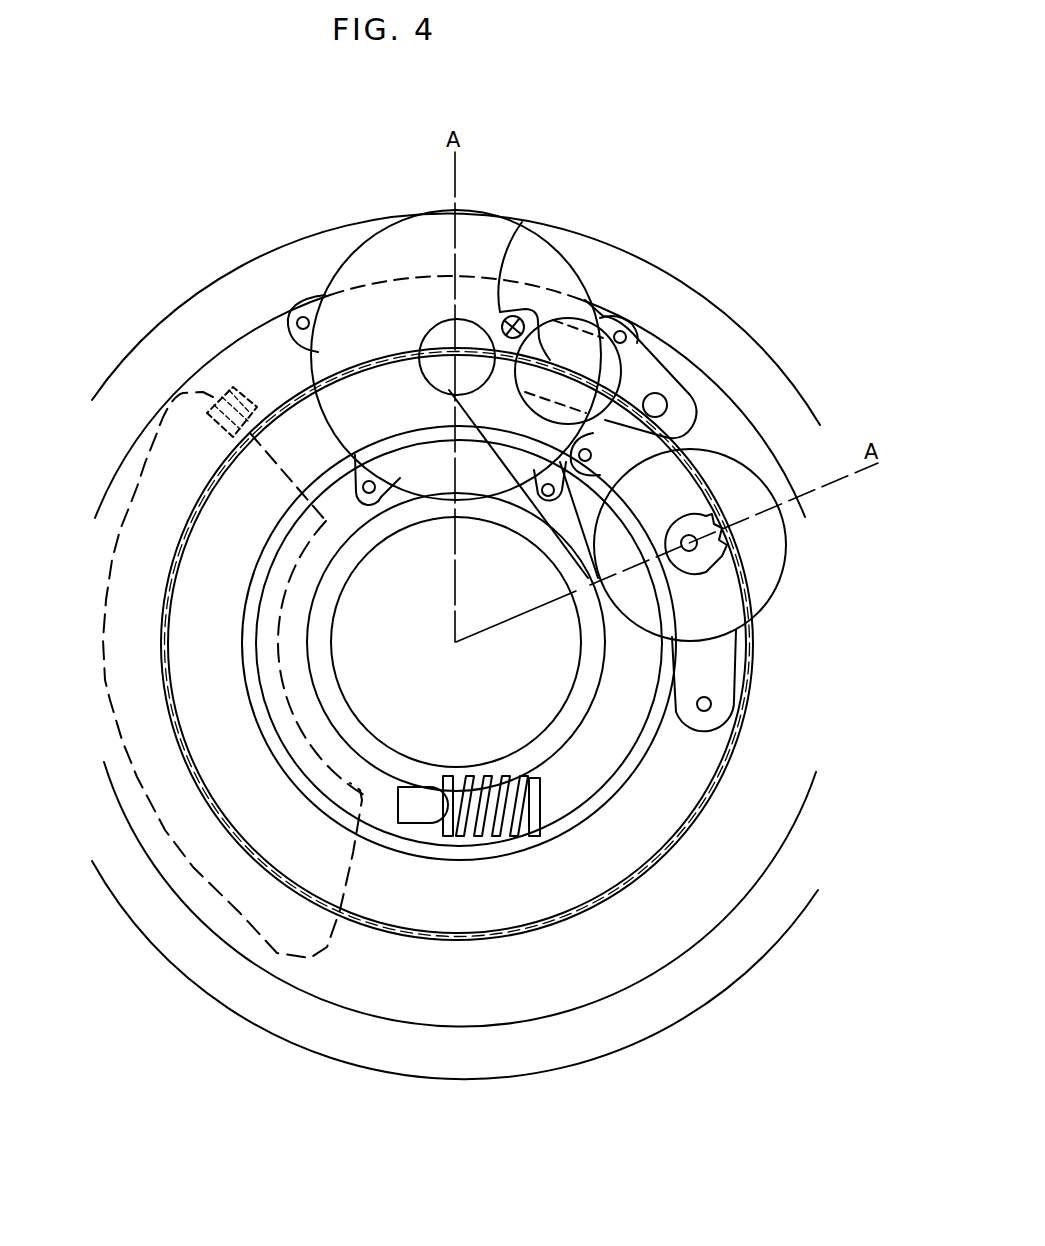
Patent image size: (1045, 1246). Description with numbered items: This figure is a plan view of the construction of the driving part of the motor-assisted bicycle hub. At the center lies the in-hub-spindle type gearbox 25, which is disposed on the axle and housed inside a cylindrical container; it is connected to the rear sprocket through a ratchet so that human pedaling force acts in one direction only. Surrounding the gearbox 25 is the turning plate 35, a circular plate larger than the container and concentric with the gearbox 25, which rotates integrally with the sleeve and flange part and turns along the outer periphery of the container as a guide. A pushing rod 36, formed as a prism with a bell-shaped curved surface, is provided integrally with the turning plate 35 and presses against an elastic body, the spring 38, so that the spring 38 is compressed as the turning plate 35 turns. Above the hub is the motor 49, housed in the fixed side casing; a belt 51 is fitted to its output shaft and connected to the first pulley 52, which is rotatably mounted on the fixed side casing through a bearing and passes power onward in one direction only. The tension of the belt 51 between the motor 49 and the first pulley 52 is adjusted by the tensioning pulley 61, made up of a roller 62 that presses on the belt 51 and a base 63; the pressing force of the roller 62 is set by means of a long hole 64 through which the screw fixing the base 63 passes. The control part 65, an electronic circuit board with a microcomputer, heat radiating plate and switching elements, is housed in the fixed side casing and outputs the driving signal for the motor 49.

The in-hub-spindle type gearbox 25 is at (534, 703).
The turning plate 35 is at (300, 697).
The pushing rod 36 is at (415, 790).
The spring 38 is at (477, 837).
The motor 49 is at (366, 245).
The belt 51 is at (533, 517).
The first pulley 52 is at (727, 453).
The tensioning pulley 61 is at (633, 375).
The roller 62 is at (577, 318).
The base 63 is at (663, 377).
The long hole 64 is at (522, 222).
The control part 65 is at (107, 683).